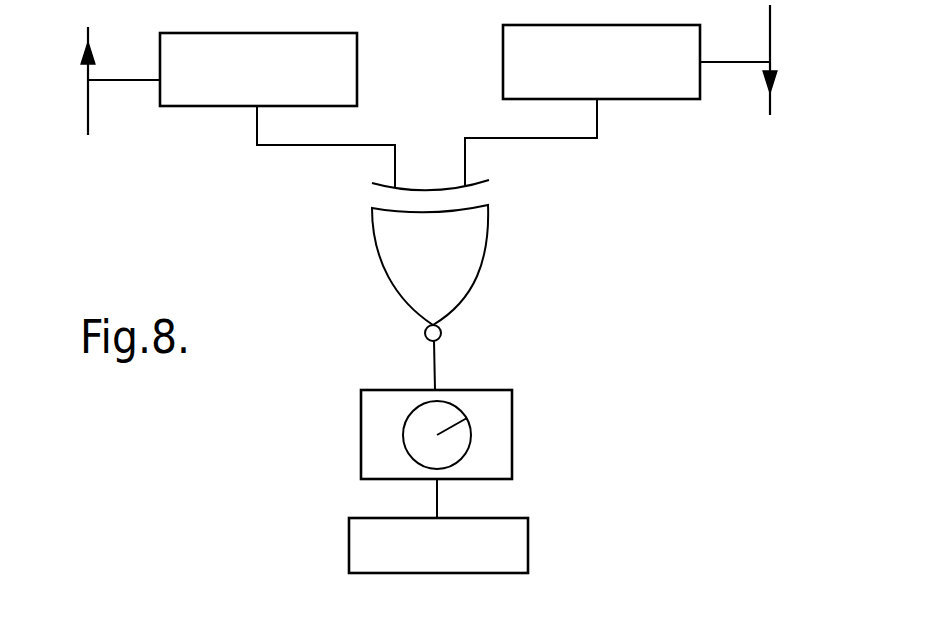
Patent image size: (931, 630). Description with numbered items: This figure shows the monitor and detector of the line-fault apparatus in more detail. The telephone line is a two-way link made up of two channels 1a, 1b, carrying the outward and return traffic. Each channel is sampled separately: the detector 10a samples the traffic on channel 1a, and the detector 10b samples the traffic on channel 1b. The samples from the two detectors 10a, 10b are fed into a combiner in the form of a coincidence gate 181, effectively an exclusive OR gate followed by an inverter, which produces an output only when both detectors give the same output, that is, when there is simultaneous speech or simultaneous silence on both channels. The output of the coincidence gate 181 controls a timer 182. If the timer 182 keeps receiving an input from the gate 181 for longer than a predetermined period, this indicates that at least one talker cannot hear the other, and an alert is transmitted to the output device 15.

The channel 1a is at (88, 114).
The channel 1b is at (772, 52).
The detector 10a is at (355, 36).
The detector 10b is at (690, 30).
The coincidence gate 181 is at (475, 256).
The timer 182 is at (502, 423).
The output device 15 is at (518, 547).